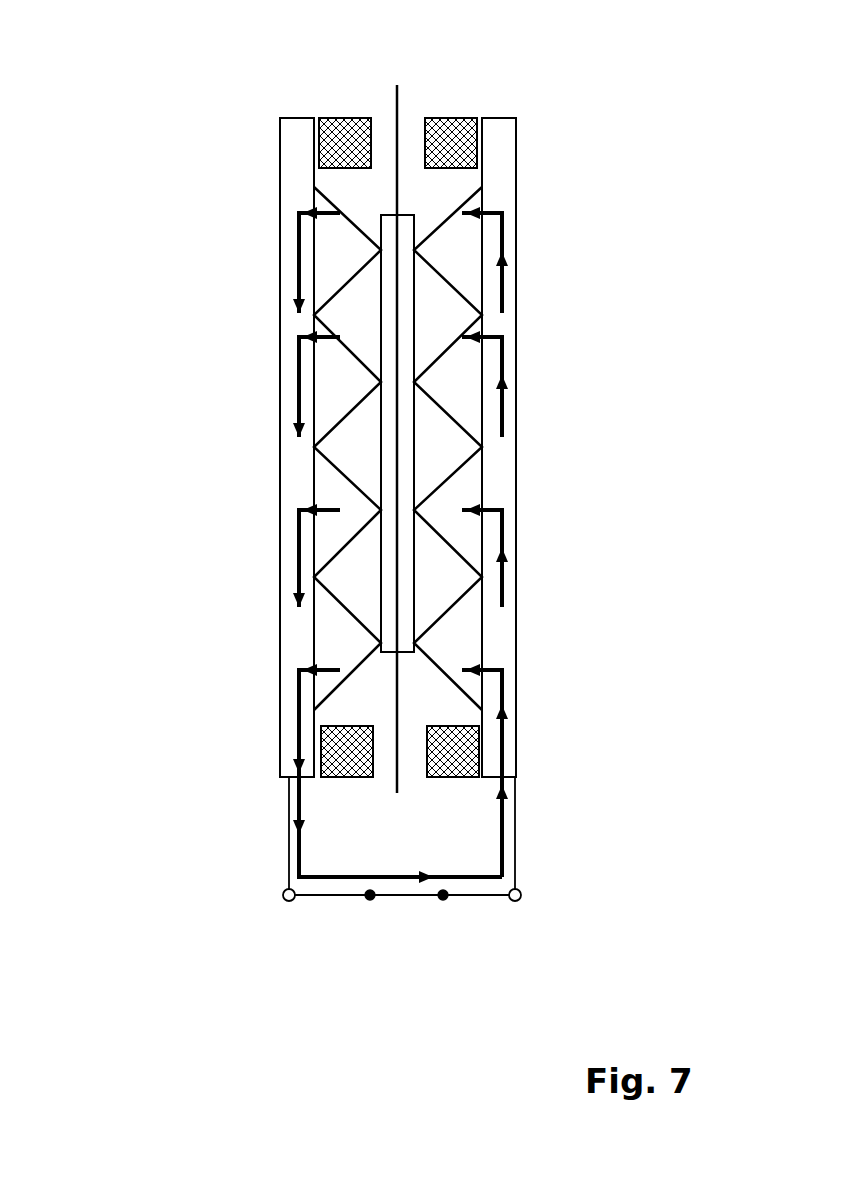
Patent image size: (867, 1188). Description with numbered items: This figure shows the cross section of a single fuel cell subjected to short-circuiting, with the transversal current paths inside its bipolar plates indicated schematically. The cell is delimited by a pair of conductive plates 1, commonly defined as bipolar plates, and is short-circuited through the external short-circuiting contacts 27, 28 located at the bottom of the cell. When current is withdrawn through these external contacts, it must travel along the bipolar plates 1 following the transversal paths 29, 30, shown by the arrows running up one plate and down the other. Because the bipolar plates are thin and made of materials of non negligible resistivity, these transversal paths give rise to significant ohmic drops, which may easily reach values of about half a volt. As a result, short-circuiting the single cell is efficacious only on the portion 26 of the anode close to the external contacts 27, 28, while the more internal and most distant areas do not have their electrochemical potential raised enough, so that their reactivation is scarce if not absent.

The bipolar plate 1 is at (290, 120).
The portion of the anode 26 is at (442, 592).
The external short-circuiting contact 27 is at (290, 825).
The external short-circuiting contact 28 is at (517, 813).
The transversal current path 29 is at (505, 582).
The transversal current path 30 is at (302, 553).